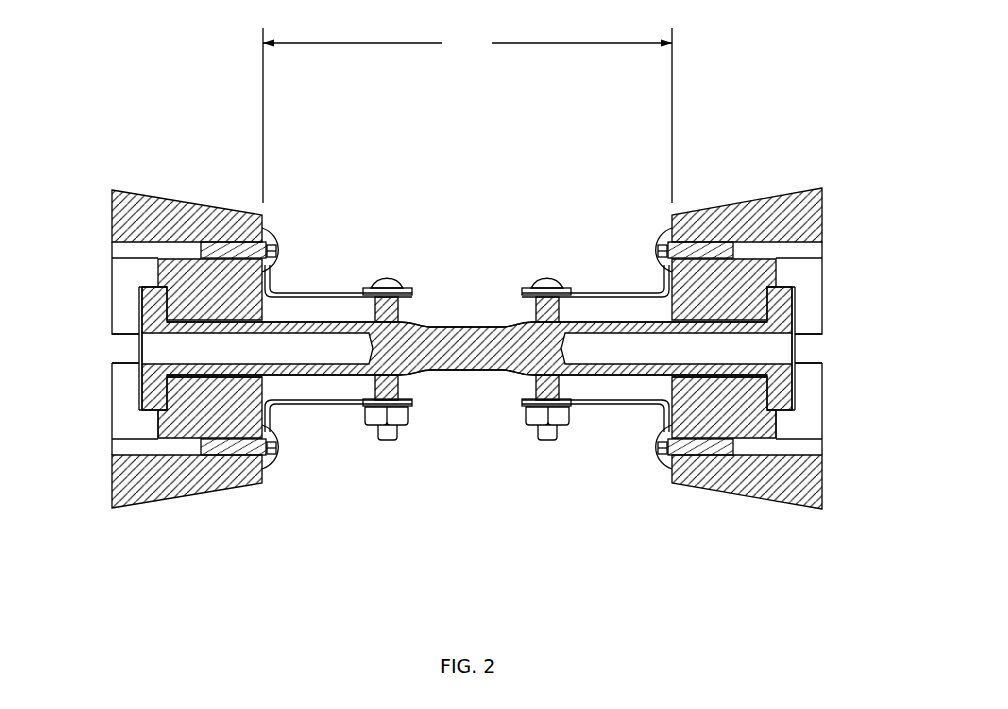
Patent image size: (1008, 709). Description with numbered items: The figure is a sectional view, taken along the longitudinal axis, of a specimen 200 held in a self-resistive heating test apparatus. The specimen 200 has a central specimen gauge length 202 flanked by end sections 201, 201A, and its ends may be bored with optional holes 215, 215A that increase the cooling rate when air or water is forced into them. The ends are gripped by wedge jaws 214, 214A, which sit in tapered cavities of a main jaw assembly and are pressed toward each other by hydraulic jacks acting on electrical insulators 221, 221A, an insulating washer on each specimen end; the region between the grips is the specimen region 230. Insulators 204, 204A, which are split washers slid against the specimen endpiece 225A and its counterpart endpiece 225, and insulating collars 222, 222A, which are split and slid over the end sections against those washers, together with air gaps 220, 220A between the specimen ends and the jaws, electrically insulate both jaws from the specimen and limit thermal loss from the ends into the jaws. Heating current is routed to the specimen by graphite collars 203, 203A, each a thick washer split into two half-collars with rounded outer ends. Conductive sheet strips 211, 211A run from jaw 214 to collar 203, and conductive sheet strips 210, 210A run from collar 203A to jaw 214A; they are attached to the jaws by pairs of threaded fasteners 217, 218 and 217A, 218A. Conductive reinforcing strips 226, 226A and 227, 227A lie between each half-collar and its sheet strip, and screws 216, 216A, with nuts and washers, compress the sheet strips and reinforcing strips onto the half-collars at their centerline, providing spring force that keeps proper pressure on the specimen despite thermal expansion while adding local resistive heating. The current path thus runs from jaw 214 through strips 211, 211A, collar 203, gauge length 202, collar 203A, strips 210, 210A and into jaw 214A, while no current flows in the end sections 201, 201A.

The specimen 200 is at (492, 322).
The end section 201 is at (620, 318).
The end section 201A is at (288, 317).
The specimen gauge length 202 is at (467, 372).
The collar 203 is at (517, 292).
The collar 203A is at (418, 289).
The insulator 204 is at (767, 418).
The insulator 204A is at (168, 422).
The conductive sheet strip 210 is at (320, 408).
The conductive sheet strip 210A is at (318, 288).
The conductive sheet strip 211 is at (588, 408).
The conductive sheet strip 211A is at (647, 284).
The wedge jaw 214 is at (765, 197).
The wedge jaw 214A is at (172, 188).
The hole 215 is at (820, 349).
The hole 215A is at (110, 348).
The screw 216 is at (547, 442).
The screw 216A is at (387, 442).
The threaded fastener 217 is at (662, 227).
The threaded fastener 217A is at (275, 227).
The threaded fastener 218 is at (660, 468).
The threaded fastener 218A is at (277, 470).
The air gap 220 is at (780, 283).
The air gap 220A is at (148, 285).
The insulator 221 is at (803, 415).
The insulator 221A is at (133, 417).
The insulating collar 222 is at (722, 383).
The insulating collar 222A is at (208, 377).
The hub body 225 is at (790, 374).
The specimen endpiece 225A is at (148, 372).
The conductive reinforcing strip 226 is at (513, 406).
The conductive reinforcing strip 226A is at (532, 310).
The conductive reinforcing strip 227 is at (420, 406).
The conductive reinforcing strip 227A is at (410, 309).
The specimen region 230 is at (467, 115).